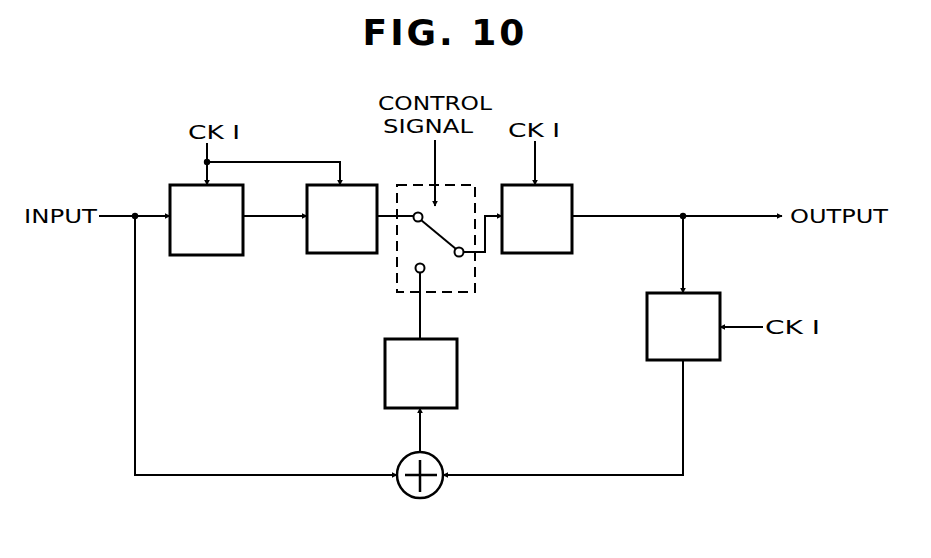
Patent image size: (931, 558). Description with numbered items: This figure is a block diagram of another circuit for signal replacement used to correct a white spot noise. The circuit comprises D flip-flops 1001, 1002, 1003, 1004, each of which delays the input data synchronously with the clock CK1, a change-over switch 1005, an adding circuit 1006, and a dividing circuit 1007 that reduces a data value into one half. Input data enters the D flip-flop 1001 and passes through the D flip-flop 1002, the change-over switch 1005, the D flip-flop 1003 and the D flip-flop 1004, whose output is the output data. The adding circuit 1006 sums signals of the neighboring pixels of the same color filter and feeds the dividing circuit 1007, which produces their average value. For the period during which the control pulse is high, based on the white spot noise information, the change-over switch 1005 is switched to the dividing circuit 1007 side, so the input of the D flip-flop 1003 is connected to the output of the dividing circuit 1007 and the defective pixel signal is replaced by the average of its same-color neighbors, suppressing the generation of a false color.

The D flip-flop 1001 is at (207, 255).
The D flip-flop 1002 is at (340, 253).
The D flip-flop 1003 is at (572, 204).
The D flip-flop 1004 is at (720, 350).
The change-over switch 1005 is at (477, 282).
The adding circuit 1006 is at (438, 457).
The dividing circuit 1007 is at (457, 390).